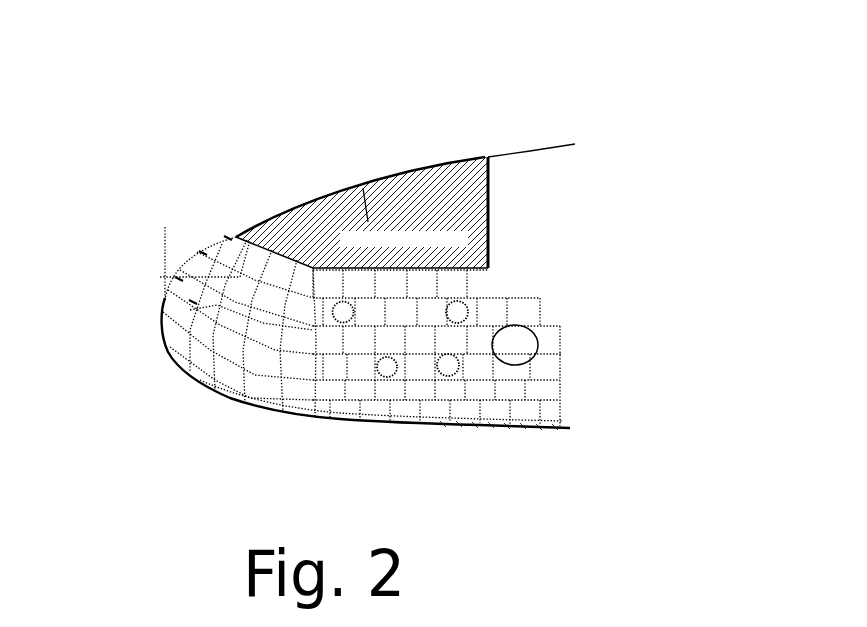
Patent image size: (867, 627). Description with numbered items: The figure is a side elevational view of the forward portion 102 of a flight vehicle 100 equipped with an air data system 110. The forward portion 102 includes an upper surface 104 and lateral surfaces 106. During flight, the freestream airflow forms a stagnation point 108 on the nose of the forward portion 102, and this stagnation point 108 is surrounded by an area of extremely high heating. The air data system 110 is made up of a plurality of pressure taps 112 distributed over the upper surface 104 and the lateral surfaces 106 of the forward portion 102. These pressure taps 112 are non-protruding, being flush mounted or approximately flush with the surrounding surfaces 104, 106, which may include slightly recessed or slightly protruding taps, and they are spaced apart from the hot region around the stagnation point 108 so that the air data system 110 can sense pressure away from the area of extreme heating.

The flight vehicle 100 is at (620, 73).
The forward portion 102 is at (198, 155).
The upper surface 104 is at (236, 237).
The lateral surfaces 106 is at (493, 288).
The stagnation point 108 is at (180, 358).
The air data system 110 is at (435, 454).
The pressure taps 112 is at (397, 378).